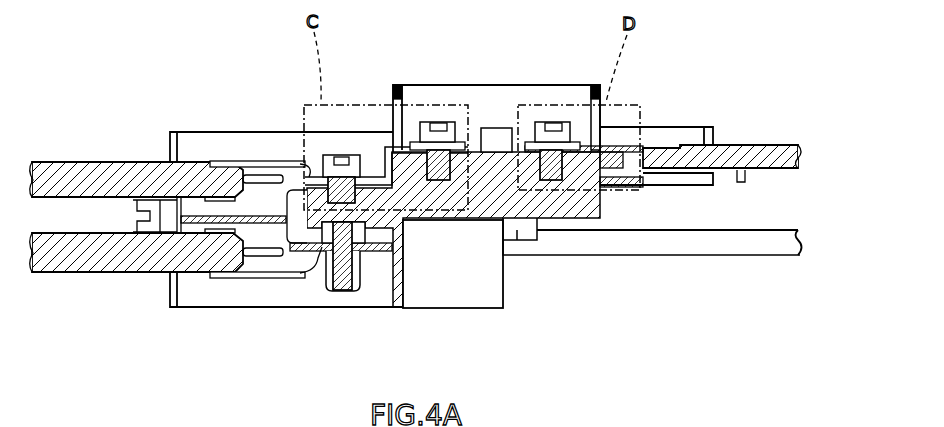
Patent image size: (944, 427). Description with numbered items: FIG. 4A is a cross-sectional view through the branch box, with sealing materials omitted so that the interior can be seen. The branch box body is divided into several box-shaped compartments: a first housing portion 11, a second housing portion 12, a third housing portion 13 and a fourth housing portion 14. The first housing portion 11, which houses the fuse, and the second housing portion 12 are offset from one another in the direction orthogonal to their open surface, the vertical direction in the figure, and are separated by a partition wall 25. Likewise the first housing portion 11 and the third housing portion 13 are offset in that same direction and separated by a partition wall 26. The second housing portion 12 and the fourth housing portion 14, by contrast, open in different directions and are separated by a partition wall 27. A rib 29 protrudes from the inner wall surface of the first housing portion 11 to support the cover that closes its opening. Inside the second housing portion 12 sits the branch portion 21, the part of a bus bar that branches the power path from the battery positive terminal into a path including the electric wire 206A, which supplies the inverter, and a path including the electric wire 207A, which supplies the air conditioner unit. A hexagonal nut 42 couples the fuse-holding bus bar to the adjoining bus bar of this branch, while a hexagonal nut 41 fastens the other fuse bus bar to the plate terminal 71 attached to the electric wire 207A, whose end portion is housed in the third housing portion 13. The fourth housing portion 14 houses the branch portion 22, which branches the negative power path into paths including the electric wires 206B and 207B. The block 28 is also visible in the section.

The first housing portion 11 is at (455, 52).
The second housing portion 12 is at (263, 111).
The third housing portion 13 is at (667, 102).
The fourth housing portion 14 is at (285, 313).
The branch portion 21 is at (343, 153).
The branch portion 22 is at (358, 286).
The partition wall 25 is at (393, 97).
The partition wall 26 is at (595, 88).
The partition wall 27 is at (193, 224).
The block 28 is at (444, 222).
The rib 29 is at (495, 127).
The hexagonal nut 41 is at (563, 120).
The hexagonal nut 42 is at (423, 100).
The plate terminal 71 is at (612, 146).
The electric wire 206A is at (69, 161).
The electric wire 206B is at (70, 276).
The electric wire 207A is at (763, 144).
The electric wire 207B is at (768, 256).